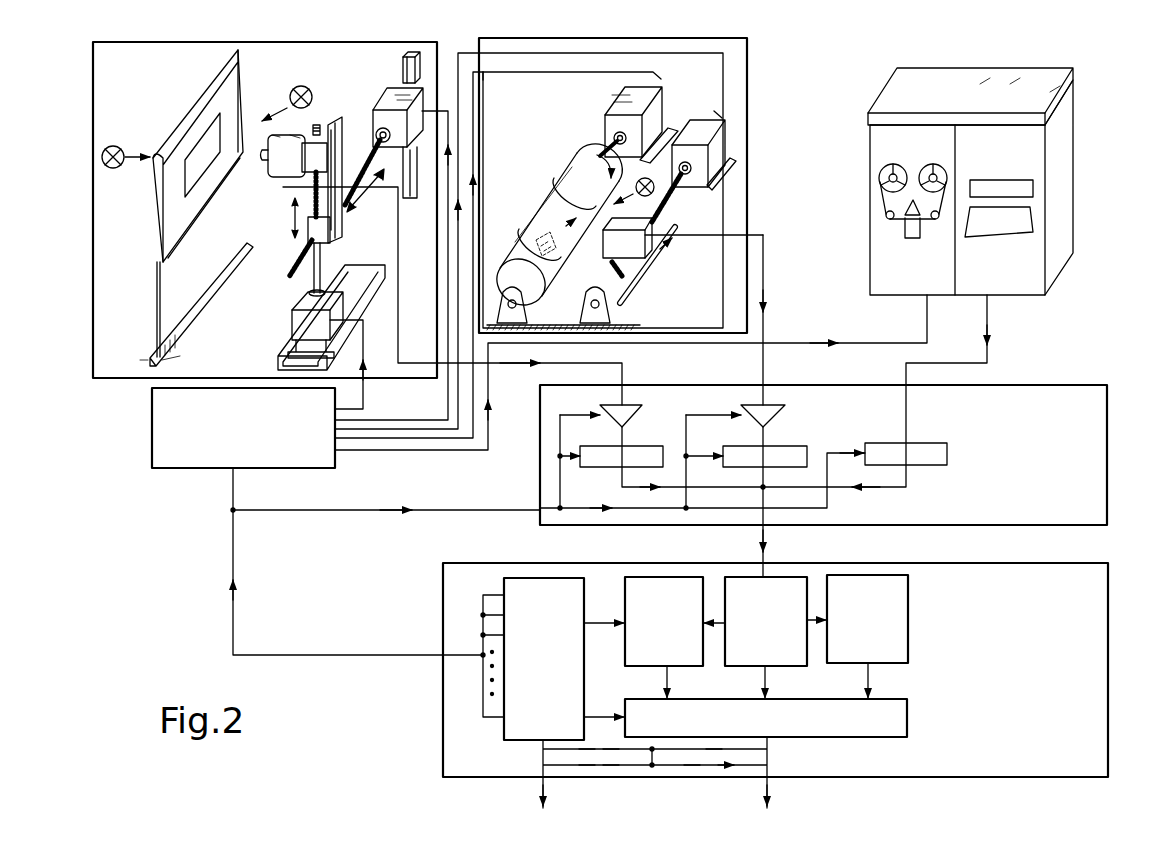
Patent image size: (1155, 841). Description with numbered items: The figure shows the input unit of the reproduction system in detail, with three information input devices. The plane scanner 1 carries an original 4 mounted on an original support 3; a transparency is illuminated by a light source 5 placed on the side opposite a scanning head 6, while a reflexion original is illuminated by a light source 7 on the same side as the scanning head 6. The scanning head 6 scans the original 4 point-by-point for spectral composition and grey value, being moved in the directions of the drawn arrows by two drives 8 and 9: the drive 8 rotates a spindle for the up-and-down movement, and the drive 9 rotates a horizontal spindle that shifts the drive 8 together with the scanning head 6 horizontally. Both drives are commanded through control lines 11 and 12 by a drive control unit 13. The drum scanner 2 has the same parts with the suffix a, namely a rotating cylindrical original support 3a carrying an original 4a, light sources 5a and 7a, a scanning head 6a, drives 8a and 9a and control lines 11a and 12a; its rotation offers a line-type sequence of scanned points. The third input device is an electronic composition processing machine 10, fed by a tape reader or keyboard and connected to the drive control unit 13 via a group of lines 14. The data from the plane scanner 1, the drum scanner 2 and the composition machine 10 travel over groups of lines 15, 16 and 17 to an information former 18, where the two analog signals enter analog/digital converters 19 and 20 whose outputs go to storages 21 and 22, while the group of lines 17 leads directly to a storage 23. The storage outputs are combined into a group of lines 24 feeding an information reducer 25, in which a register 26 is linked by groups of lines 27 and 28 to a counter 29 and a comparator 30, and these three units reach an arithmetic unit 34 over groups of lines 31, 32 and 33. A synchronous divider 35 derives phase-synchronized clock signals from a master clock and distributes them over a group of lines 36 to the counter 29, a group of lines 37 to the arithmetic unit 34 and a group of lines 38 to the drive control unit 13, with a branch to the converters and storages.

The plane scanner 1 is at (113, 380).
The drum scanner 2 is at (748, 208).
The original support 3 is at (210, 82).
The cylindrical original support 3a is at (518, 252).
The original 4 is at (205, 143).
The original 4a is at (556, 195).
The light source 5 is at (116, 168).
The light source 5a is at (522, 228).
The scanning head 6 is at (283, 179).
The scanning head 6a is at (650, 262).
The light source 7 is at (291, 97).
The light source 7a is at (654, 194).
The drive 8 is at (293, 324).
The drive 8a is at (661, 104).
The drive 9 is at (383, 101).
The drive 9a is at (728, 133).
The electronic composition processing machine 10 is at (869, 219).
The control line 11 is at (363, 395).
The control line 11a is at (508, 73).
The control line 12 is at (411, 420).
The control line 12a is at (422, 440).
The drive control unit 13 is at (180, 468).
The group of lines 14 is at (858, 341).
The group of lines 15 is at (398, 230).
The group of lines 16 is at (766, 284).
The group of lines 17 is at (988, 314).
The information former 18 is at (1068, 385).
The analog/digital converter 19 is at (625, 404).
The analog/digital converter 20 is at (770, 404).
The storage 21 is at (600, 446).
The storage 22 is at (733, 446).
The storage 23 is at (885, 443).
The group of lines 24 is at (768, 550).
The information reducer 25 is at (442, 719).
The register 26 is at (738, 576).
The group of lines 27 is at (724, 630).
The group of lines 28 is at (816, 626).
The counter 29 is at (660, 577).
The comparator 30 is at (909, 624).
The group of lines 31 is at (672, 681).
The group of lines 32 is at (768, 681).
The group of lines 33 is at (873, 678).
The arithmetic unit 34 is at (908, 723).
The synchronous divider 35 is at (504, 741).
The group of lines 36 is at (600, 621).
The group of lines 37 is at (603, 715).
The group of lines 38 is at (237, 608).